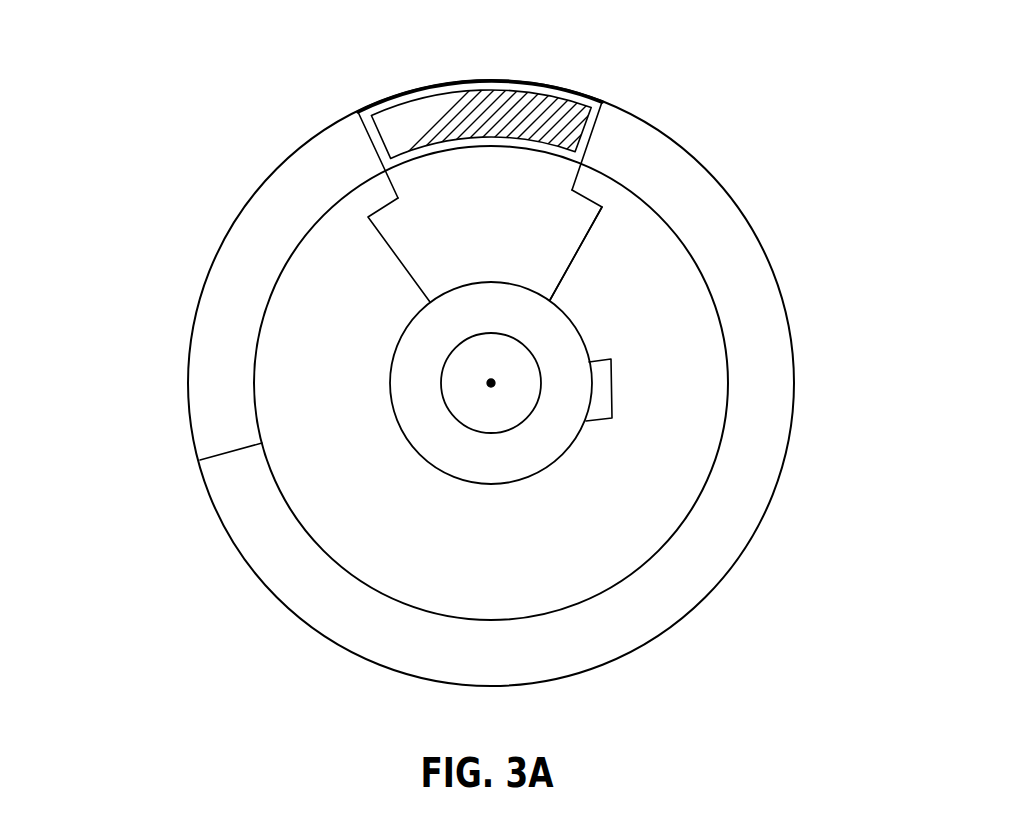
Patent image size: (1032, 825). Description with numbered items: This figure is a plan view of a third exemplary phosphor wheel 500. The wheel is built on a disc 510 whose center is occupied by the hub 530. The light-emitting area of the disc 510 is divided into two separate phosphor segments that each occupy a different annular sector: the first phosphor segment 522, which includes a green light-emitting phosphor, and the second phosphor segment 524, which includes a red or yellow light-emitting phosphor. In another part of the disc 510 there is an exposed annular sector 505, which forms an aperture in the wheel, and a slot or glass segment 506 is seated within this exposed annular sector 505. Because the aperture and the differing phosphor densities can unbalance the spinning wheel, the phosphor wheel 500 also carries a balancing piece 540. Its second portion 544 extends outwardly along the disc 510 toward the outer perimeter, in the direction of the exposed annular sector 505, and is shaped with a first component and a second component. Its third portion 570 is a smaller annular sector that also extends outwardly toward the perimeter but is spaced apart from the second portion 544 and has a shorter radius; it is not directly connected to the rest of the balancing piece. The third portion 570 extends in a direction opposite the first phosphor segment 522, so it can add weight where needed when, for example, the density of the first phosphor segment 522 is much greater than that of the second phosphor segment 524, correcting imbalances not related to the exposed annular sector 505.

The phosphor wheel 500 is at (67, 129).
The exposed annular sector 505 is at (605, 102).
The glass segment 506 is at (445, 127).
The disc 510 is at (422, 547).
The first phosphor segment 522 is at (253, 250).
The second phosphor segment 524 is at (253, 512).
The hub 530 is at (432, 420).
The balancing piece 540 is at (595, 270).
The second portion 544 is at (573, 230).
The third portion 570 is at (600, 402).